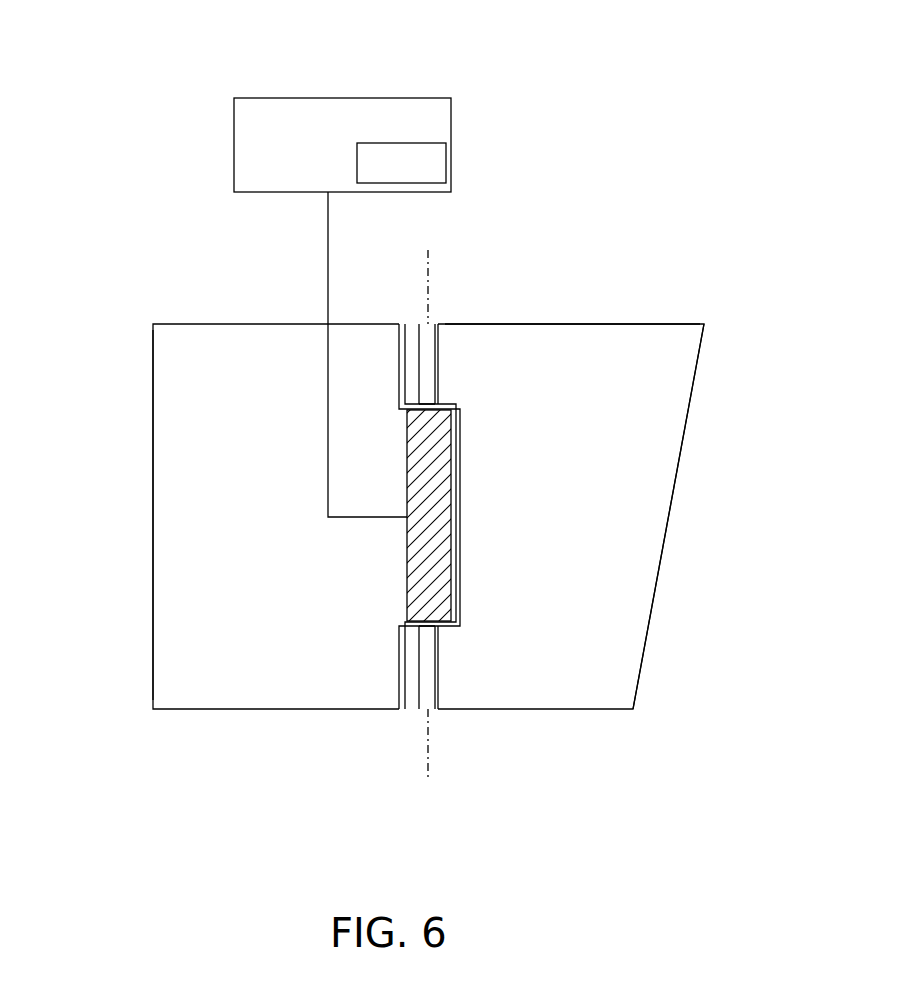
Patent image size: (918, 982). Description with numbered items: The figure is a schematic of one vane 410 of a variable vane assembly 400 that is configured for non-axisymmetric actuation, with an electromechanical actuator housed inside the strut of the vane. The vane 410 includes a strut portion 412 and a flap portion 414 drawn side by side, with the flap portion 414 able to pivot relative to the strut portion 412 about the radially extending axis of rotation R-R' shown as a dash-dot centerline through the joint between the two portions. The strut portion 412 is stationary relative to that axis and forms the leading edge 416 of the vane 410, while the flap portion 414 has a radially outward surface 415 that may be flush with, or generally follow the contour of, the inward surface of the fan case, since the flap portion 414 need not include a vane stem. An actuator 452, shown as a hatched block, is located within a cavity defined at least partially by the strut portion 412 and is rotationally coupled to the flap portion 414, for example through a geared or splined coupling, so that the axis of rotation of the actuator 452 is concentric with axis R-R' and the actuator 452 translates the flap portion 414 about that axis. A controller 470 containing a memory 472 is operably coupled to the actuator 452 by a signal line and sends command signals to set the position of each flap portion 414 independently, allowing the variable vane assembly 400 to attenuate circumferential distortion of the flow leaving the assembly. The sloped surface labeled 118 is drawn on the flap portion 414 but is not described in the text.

The variable vane assembly 400 is at (196, 98).
The vane 410 is at (188, 297).
The strut portion 412 is at (276, 516).
The flap portion 414 is at (571, 516).
The radially outward surface 415 is at (592, 324).
The leading edge 416 is at (152, 468).
The slanted surface 118 is at (655, 552).
The actuator 452 is at (422, 585).
The controller 470 is at (342, 145).
The memory 472 is at (401, 163).